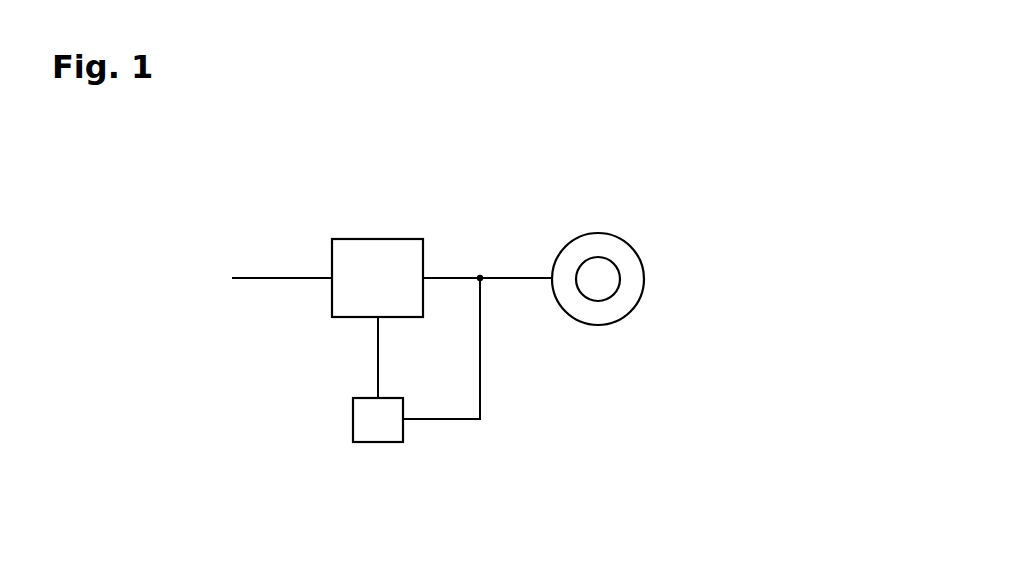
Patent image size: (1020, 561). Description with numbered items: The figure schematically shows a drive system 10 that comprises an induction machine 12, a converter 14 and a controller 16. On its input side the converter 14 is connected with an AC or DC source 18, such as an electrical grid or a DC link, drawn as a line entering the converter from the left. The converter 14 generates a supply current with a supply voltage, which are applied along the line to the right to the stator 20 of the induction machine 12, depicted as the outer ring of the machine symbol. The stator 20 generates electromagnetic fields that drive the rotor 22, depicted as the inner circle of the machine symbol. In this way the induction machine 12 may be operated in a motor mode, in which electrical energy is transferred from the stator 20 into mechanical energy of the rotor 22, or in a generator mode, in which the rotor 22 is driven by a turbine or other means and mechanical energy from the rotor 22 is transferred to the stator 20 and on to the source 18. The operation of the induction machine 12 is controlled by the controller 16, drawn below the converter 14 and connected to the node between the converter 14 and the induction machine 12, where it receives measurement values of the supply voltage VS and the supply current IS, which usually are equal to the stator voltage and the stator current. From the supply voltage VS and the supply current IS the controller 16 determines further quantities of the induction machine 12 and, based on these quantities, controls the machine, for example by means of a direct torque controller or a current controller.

The drive system 10 is at (684, 182).
The induction machine 12 is at (665, 309).
The converter 14 is at (377, 253).
The controller 16 is at (378, 432).
The AC or DC source 18 is at (264, 251).
The stator 20 is at (635, 278).
The rotor 22 is at (597, 286).
The supply voltage VS is at (471, 217).
The supply current IS is at (509, 236).